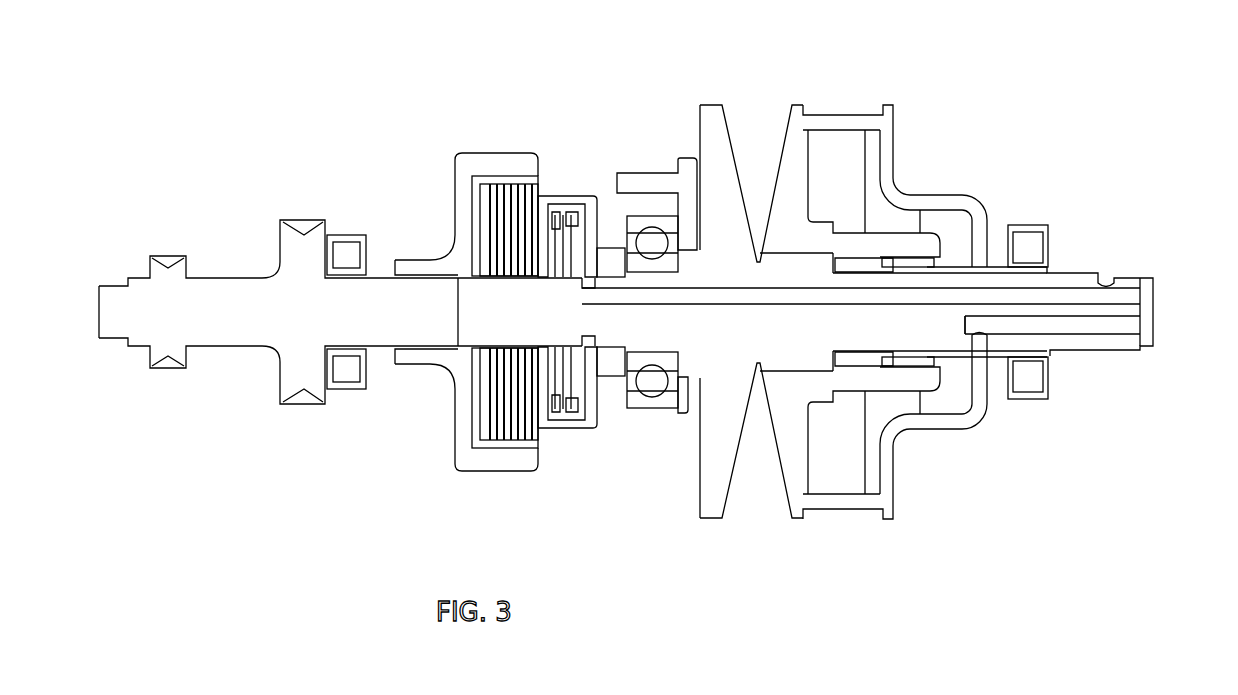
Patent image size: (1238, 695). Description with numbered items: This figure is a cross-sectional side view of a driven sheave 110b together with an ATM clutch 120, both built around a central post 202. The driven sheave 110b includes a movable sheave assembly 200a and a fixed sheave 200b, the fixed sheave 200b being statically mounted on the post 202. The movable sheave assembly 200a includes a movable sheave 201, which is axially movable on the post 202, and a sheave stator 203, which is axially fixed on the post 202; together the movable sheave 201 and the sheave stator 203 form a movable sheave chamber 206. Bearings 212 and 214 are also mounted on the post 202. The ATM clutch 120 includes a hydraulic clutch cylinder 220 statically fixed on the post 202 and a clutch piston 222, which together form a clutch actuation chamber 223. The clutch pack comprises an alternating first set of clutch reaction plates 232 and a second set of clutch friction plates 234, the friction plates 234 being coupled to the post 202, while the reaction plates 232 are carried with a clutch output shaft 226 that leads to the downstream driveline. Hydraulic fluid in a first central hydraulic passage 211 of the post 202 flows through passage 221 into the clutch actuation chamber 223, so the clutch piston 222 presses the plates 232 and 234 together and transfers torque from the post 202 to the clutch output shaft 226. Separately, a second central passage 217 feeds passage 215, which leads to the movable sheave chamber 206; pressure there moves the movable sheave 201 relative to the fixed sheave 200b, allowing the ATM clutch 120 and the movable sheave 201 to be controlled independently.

The driven sheave 110b is at (992, 106).
The ATM clutch 120 is at (454, 141).
The movable sheave assembly 200a is at (866, 105).
The fixed sheave 200b is at (722, 123).
The movable sheave 201 is at (805, 118).
The post 202 is at (940, 342).
The sheave stator 203 is at (990, 220).
The movable sheave chamber 206 is at (940, 227).
The first central hydraulic passage 211 is at (1065, 302).
The bearing 212 is at (643, 407).
The bearing 214 is at (1043, 228).
The passage 215 is at (977, 352).
The second central passage 217 is at (1063, 330).
The hydraulic clutch cylinder 220 is at (587, 202).
The passage 221 is at (607, 230).
The clutch piston 222 is at (563, 387).
The clutch actuation chamber 223 is at (577, 407).
The clutch output shaft 226 is at (387, 297).
The first set of clutch reaction plates 232 is at (503, 175).
The second set of clutch friction plates 234 is at (528, 175).